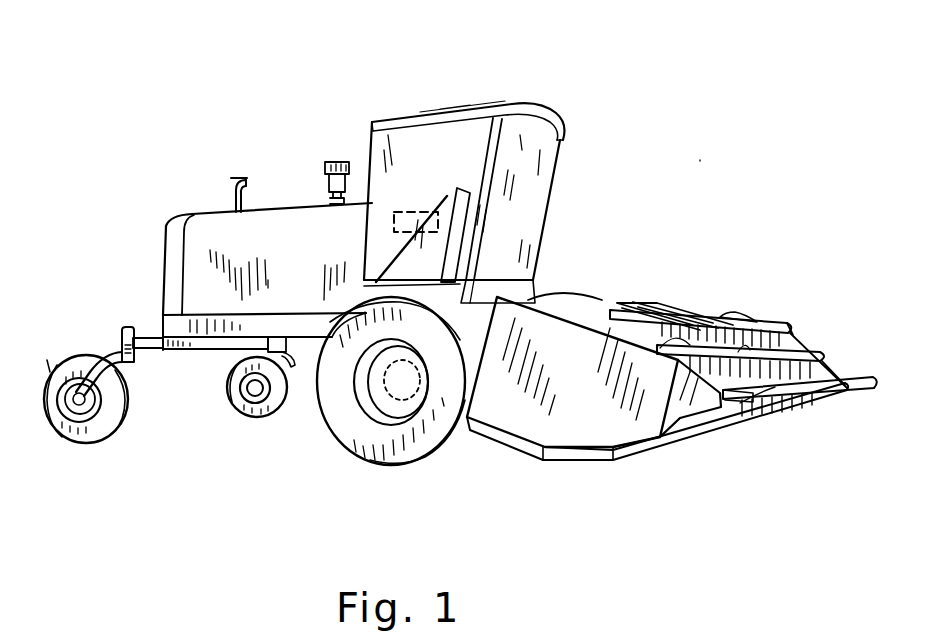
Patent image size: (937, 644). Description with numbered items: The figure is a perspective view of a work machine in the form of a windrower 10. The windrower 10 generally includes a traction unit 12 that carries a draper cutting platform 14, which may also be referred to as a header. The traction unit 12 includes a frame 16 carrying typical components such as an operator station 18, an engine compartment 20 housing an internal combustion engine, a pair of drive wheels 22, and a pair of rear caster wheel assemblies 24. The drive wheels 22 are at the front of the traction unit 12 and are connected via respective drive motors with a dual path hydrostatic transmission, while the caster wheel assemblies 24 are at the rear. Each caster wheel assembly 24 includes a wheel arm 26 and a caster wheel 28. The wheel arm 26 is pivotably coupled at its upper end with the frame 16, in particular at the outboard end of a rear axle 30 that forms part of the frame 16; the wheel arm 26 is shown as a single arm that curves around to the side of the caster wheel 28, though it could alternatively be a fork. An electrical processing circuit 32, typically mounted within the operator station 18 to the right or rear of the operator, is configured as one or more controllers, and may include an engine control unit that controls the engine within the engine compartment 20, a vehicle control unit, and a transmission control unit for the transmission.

The windrower 10 is at (682, 175).
The traction unit 12 is at (428, 111).
The draper cutting platform 14 is at (762, 316).
The frame 16 is at (197, 350).
The operator station 18 is at (510, 104).
The engine compartment 20 is at (284, 195).
The drive wheels 22 is at (372, 457).
The rear caster wheel assemblies 24 is at (51, 374).
The wheel arm 26 is at (112, 355).
The caster wheel 28 is at (68, 441).
The rear axle 30 is at (143, 333).
The electrical processing circuit 32 is at (394, 225).